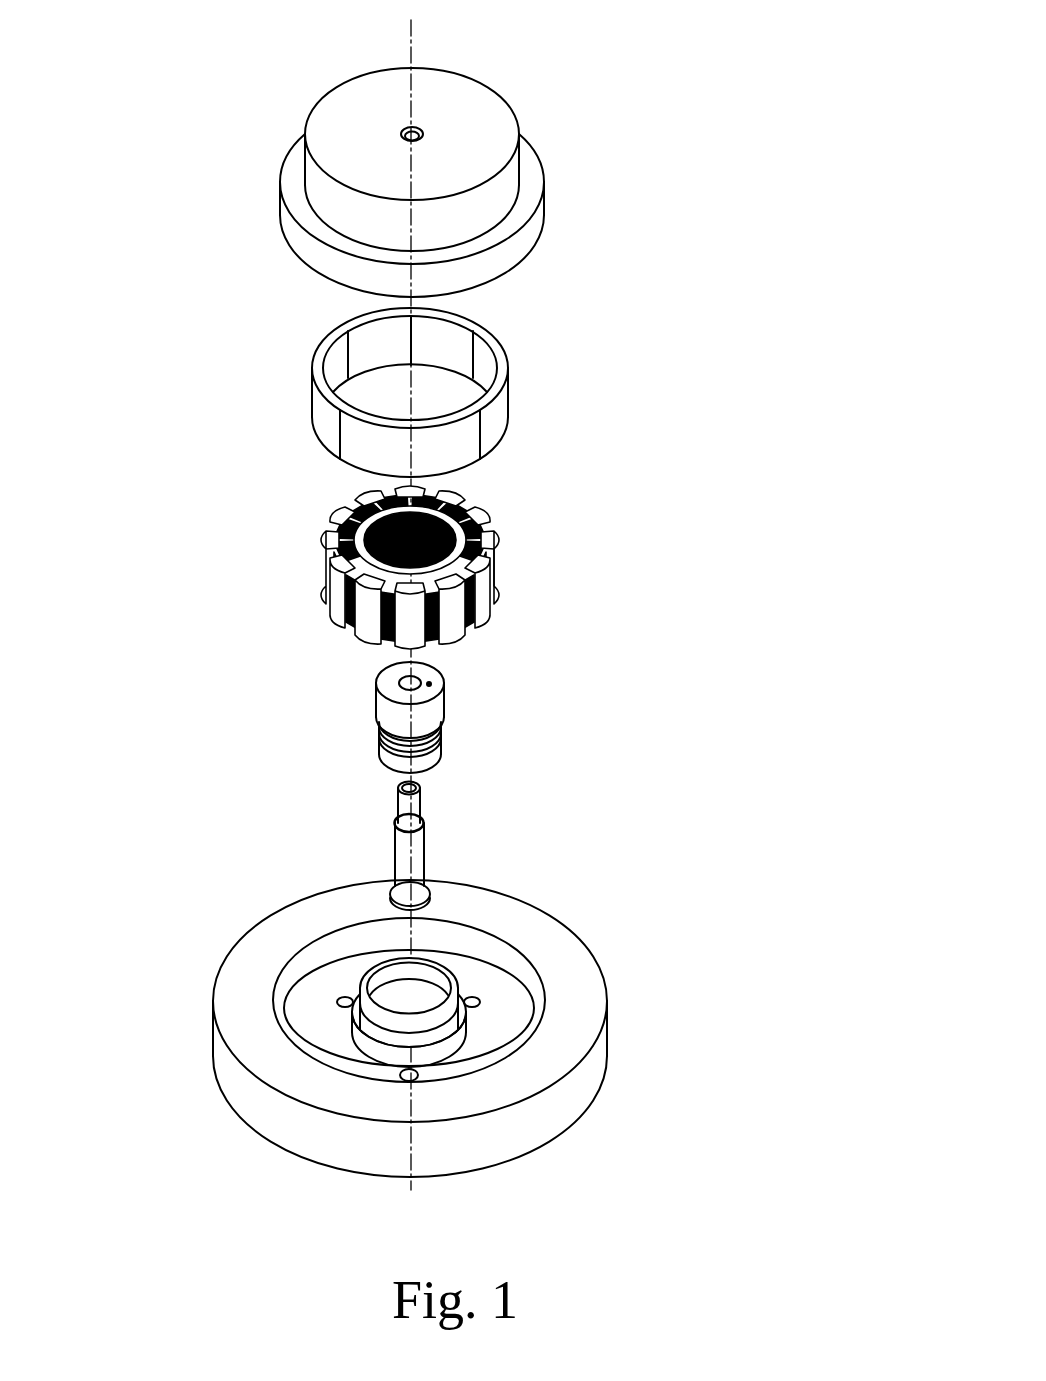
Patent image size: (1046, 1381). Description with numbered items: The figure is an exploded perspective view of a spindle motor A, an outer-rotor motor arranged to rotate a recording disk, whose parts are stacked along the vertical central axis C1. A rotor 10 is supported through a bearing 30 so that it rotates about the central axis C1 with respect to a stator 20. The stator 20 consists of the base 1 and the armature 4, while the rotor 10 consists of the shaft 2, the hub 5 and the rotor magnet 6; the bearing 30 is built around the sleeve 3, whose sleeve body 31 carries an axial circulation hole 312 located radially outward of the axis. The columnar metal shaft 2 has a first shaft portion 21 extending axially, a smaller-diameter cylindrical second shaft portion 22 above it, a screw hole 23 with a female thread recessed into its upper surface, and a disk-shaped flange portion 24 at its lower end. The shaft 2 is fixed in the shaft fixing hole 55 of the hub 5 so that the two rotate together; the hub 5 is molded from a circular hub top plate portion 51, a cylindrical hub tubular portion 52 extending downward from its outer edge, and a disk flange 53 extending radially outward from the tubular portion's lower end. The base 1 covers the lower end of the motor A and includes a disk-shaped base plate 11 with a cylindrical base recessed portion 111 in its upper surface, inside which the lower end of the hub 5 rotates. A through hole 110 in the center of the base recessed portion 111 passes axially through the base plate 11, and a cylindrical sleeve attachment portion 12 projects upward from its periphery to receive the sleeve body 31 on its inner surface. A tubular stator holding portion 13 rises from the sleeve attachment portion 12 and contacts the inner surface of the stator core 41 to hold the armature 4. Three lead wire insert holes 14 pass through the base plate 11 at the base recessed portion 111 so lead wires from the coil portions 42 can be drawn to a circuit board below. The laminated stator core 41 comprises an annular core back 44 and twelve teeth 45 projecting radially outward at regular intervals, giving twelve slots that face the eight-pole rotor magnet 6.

The motor A is at (150, 120).
The central axis C1 is at (413, 40).
The base 1 is at (399, 946).
The shaft 2 is at (535, 640).
The sleeve 3 is at (413, 713).
The armature 4 is at (365, 568).
The hub 5 is at (480, 176).
The rotor magnet 6 is at (508, 377).
The rotor 10 is at (505, 465).
The base plate 11 is at (528, 1018).
The sleeve attachment portion 12 is at (337, 1002).
The stator holding portion 13 is at (370, 982).
The lead wire insert hole 14 is at (413, 1078).
The stator 20 is at (378, 847).
The first shaft portion 21 is at (405, 852).
The second shaft portion 22 is at (400, 810).
The screw hole 23 is at (418, 790).
The flange portion 24 is at (432, 888).
The bearing 30 is at (433, 733).
The sleeve body 31 is at (383, 683).
The stator core 41 is at (454, 567).
The coil portion 42 is at (477, 567).
The annular core back 44 is at (488, 522).
The tooth 45 is at (521, 554).
The hub top plate portion 51 is at (467, 103).
The hub tubular portion 52 is at (510, 170).
The disk flange 53 is at (290, 218).
The shaft fixing hole 55 is at (403, 135).
The through hole 110 is at (420, 1007).
The base recessed portion 111 is at (328, 1052).
The circulation hole 312 is at (432, 683).